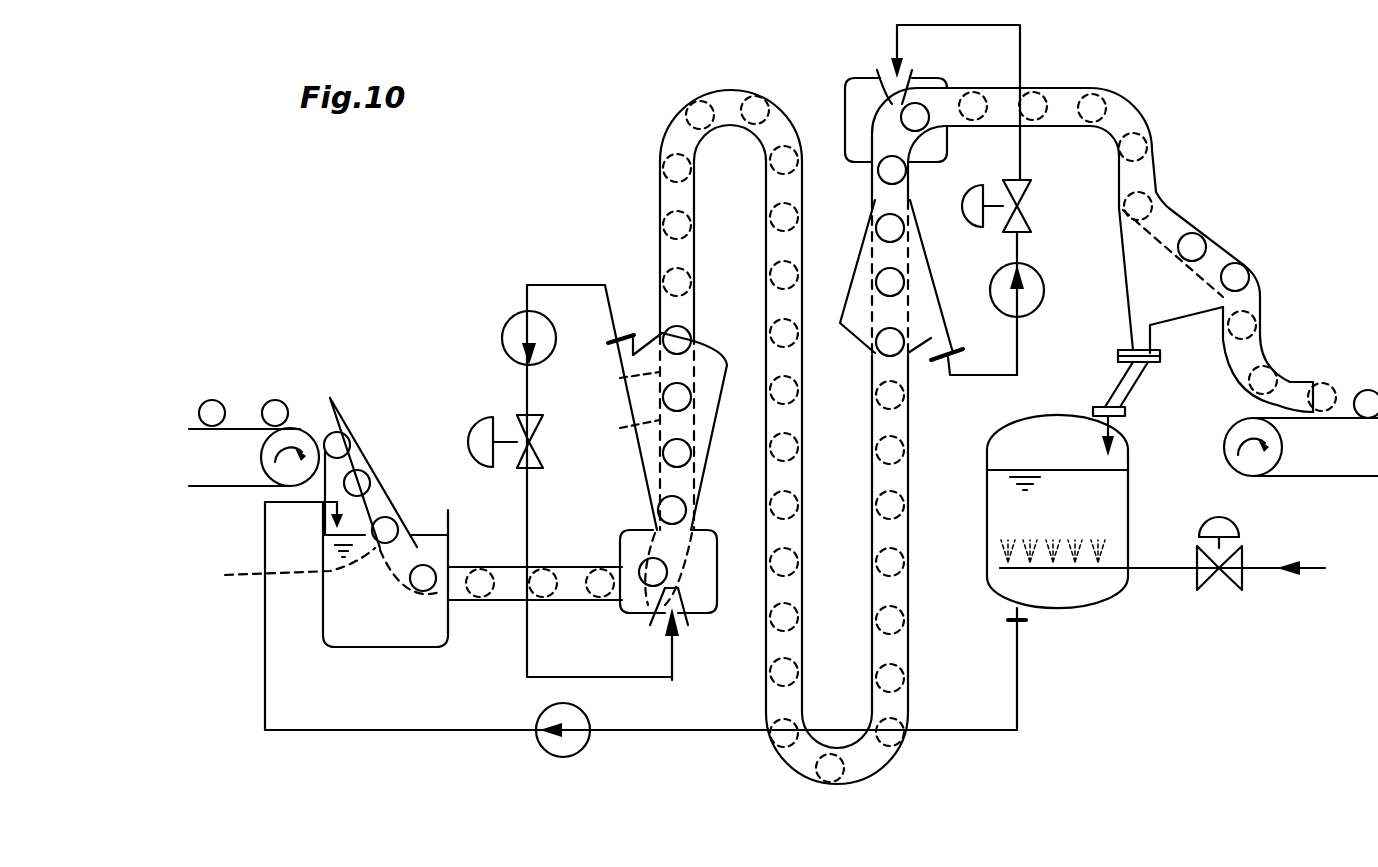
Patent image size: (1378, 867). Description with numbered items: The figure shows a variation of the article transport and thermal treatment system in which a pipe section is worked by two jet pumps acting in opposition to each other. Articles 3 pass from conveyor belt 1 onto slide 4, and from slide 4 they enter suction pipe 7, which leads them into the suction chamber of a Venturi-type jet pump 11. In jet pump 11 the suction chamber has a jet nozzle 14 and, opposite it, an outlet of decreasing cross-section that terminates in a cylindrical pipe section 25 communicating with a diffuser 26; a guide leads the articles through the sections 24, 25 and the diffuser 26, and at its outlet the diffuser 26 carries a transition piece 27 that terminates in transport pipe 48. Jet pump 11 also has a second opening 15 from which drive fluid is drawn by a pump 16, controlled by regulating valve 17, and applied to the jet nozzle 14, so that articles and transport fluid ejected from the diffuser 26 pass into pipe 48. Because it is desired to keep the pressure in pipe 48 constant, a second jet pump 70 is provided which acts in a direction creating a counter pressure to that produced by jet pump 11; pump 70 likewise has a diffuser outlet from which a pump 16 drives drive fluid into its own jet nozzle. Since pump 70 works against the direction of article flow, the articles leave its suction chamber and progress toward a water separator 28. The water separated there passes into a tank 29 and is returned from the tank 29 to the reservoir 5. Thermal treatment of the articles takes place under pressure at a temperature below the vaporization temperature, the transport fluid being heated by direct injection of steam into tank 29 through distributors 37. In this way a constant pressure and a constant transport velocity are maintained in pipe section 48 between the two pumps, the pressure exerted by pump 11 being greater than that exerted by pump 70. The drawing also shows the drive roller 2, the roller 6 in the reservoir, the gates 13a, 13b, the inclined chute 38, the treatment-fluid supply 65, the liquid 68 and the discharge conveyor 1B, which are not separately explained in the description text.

The conveyor belt 1 is at (222, 487).
The drive roller 2 is at (280, 467).
The articles 3 is at (272, 405).
The slide 4 is at (322, 571).
The reservoir 5 is at (445, 637).
The immersion roller 6 is at (415, 535).
The suction pipe 7 is at (478, 566).
The jet pump 11 is at (650, 468).
The gate 13a is at (620, 378).
The gate 13b is at (620, 428).
The jet nozzle 14 is at (678, 615).
The second opening 15 is at (612, 341).
The pump 16 is at (508, 335).
The regulating valve 17 is at (480, 432).
The pipe section 24 is at (845, 95).
The cylindrical pipe section 25 is at (875, 195).
The diffuser 26 is at (712, 442).
The transition piece 27 is at (642, 340).
The water separator 28 is at (1140, 262).
The tank 29 is at (1125, 588).
The distributors 37 is at (1073, 570).
The inclined conveyor 38 is at (375, 435).
The transport pipe 48 is at (660, 188).
The treatment fluid supply 65 is at (1022, 58).
The liquid 68 is at (378, 633).
The second jet pump 70 is at (935, 258).
The discharge conveyor 1B is at (1328, 478).